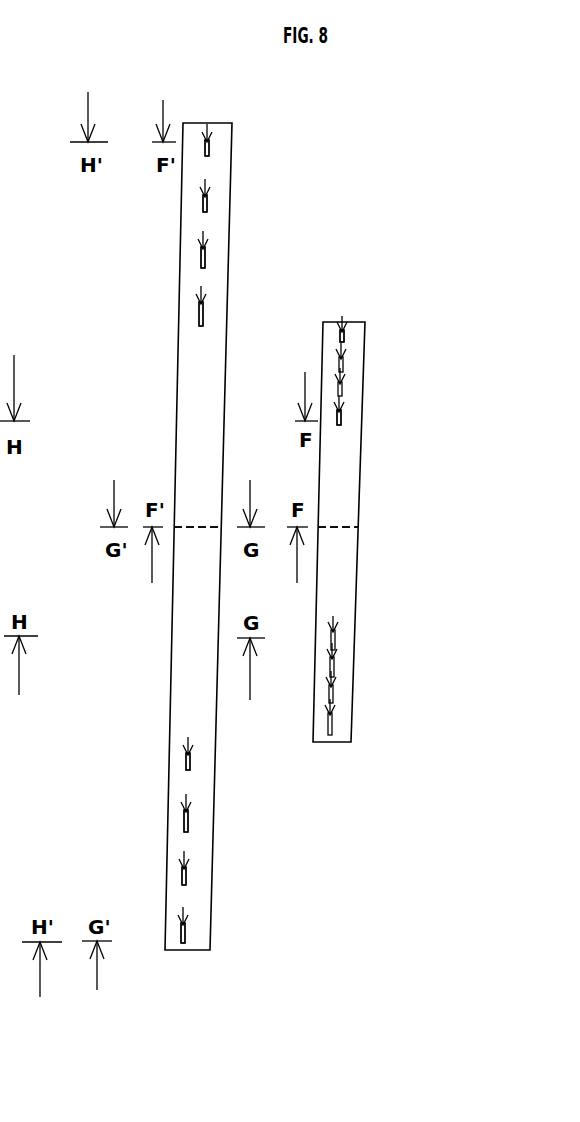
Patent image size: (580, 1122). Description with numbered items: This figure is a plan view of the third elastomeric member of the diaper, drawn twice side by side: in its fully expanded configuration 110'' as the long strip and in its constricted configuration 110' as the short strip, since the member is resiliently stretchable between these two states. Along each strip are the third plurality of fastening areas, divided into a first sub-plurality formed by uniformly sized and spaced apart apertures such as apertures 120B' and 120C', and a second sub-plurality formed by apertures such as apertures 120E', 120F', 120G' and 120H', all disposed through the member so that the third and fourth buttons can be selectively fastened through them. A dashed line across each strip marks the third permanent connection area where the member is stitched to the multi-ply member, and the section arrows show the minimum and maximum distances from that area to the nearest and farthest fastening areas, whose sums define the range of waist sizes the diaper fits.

The fully expanded configuration of the third elastomeric member 110'' is at (183, 501).
The constricted configuration of the third elastomeric member 110' is at (317, 512).
The aperture 120B' is at (258, 195).
The aperture 120C' is at (251, 256).
The aperture 120E' is at (242, 769).
The aperture 120F' is at (238, 823).
The aperture 120G' is at (237, 873).
The aperture 120H' is at (236, 926).